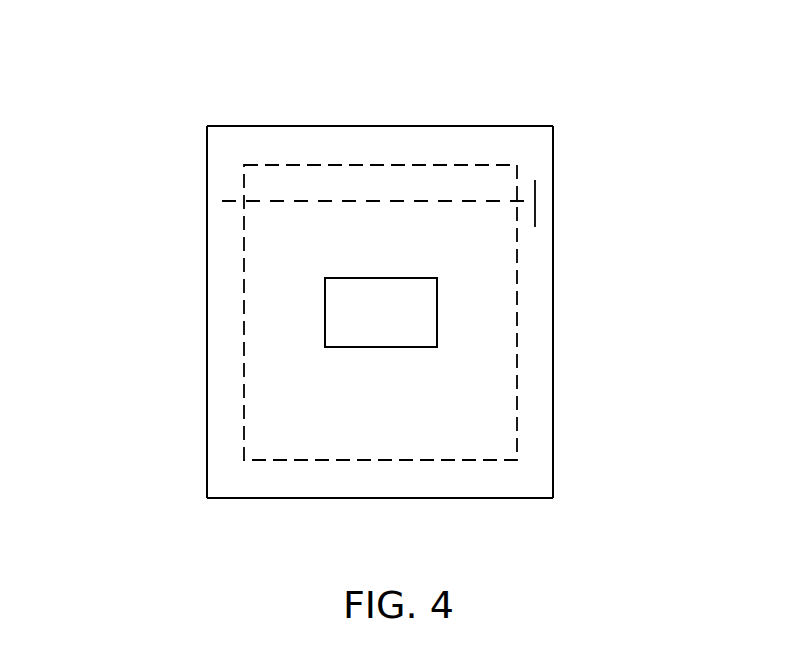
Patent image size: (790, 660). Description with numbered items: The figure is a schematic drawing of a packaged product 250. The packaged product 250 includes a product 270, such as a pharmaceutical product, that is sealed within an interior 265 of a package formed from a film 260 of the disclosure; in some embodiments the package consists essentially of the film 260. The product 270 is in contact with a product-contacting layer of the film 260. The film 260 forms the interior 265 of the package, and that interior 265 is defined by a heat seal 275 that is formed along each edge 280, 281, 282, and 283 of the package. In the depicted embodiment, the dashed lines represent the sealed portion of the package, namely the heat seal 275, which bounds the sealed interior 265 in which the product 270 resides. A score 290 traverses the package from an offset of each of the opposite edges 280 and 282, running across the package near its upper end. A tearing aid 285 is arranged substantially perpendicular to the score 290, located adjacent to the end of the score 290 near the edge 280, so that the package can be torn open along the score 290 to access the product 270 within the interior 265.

The packaged product 250 is at (162, 82).
The film 260 is at (207, 168).
The interior 265 is at (480, 310).
The product 270 is at (403, 329).
The heat seal 275 is at (515, 273).
The edge 280 is at (553, 440).
The edge 281 is at (280, 126).
The edge 282 is at (207, 352).
The edge 283 is at (467, 498).
The tearing aid 285 is at (535, 192).
The score 290 is at (422, 201).